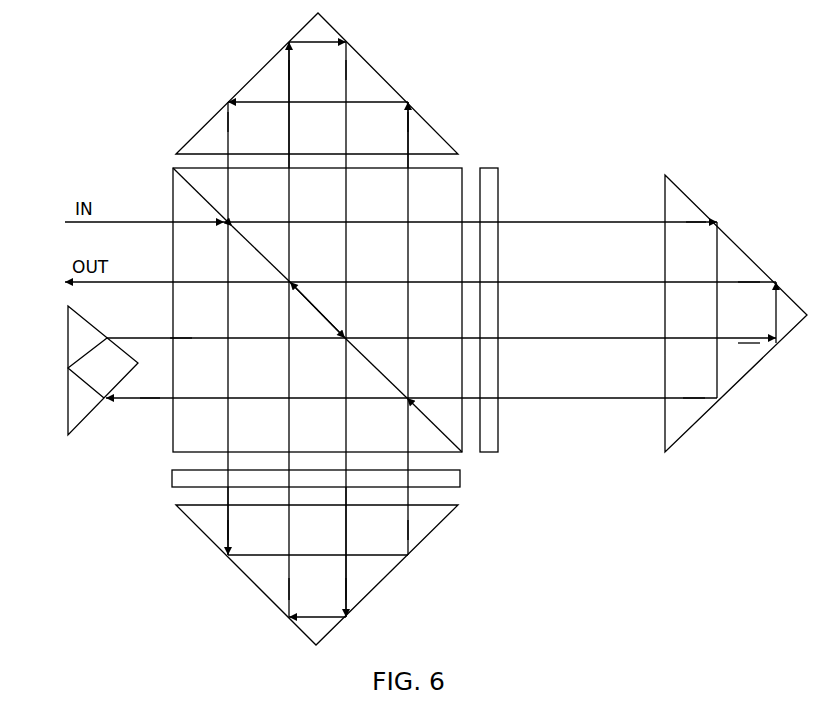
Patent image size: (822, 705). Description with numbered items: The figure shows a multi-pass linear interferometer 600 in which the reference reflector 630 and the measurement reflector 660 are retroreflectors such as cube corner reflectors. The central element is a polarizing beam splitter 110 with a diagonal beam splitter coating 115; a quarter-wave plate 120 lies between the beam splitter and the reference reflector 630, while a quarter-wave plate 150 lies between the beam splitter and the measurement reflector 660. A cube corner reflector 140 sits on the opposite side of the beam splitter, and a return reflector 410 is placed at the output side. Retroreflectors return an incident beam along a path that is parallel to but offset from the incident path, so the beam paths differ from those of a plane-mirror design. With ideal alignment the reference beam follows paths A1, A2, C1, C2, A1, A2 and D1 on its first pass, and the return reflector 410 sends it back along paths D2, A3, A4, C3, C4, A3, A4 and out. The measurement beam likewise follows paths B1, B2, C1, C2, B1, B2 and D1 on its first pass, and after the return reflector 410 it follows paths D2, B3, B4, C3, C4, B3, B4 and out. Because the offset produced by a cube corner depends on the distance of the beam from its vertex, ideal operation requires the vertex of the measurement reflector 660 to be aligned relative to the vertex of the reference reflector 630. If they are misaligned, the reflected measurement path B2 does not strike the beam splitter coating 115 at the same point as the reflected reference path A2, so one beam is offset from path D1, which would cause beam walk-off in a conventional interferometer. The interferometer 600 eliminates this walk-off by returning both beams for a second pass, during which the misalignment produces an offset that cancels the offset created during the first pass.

The multi-pass linear interferometer 600 is at (138, 40).
The polarizing beam splitter 110 is at (213, 441).
The beam splitter coating 115 is at (203, 200).
The cube corner reflector 140 is at (457, 152).
The quarter-wave plate 150 is at (488, 168).
The quarter-wave plate 120 is at (172, 482).
The reference reflector 630 is at (440, 510).
The measurement reflector 660 is at (673, 438).
The return reflector 410 is at (68, 380).
The path C1 is at (410, 130).
The path C2 is at (228, 130).
The path C3 is at (288, 78).
The path C4 is at (348, 78).
The path A1 is at (228, 522).
The path A2 is at (408, 522).
The path A3 is at (346, 578).
The path A4 is at (289, 578).
The path B1 is at (686, 222).
The path B2 is at (683, 400).
The path B3 is at (738, 343).
The path B4 is at (738, 283).
The path D1 is at (155, 400).
The path D2 is at (192, 338).